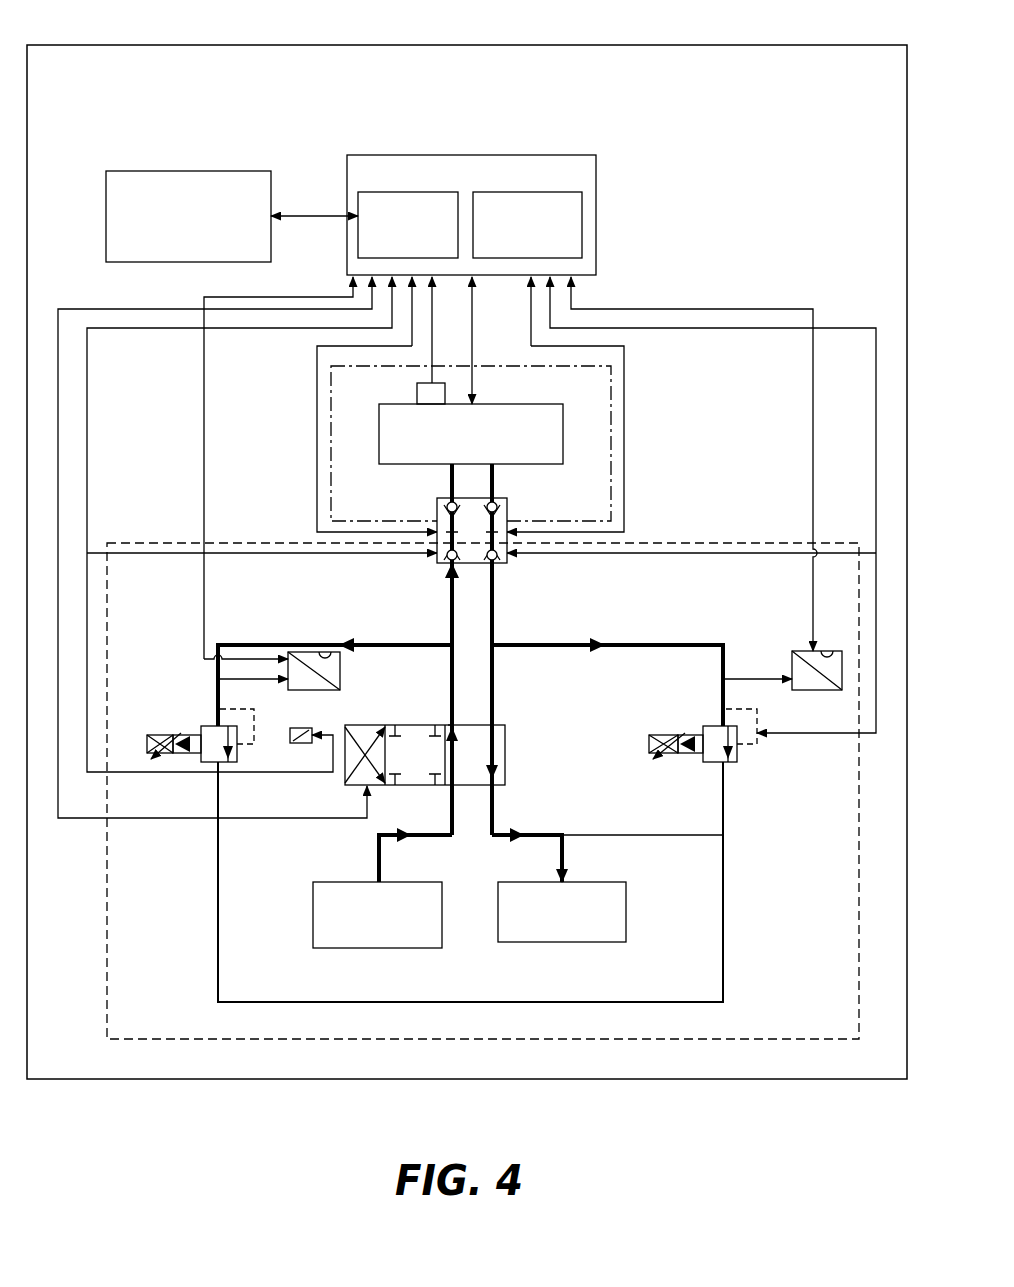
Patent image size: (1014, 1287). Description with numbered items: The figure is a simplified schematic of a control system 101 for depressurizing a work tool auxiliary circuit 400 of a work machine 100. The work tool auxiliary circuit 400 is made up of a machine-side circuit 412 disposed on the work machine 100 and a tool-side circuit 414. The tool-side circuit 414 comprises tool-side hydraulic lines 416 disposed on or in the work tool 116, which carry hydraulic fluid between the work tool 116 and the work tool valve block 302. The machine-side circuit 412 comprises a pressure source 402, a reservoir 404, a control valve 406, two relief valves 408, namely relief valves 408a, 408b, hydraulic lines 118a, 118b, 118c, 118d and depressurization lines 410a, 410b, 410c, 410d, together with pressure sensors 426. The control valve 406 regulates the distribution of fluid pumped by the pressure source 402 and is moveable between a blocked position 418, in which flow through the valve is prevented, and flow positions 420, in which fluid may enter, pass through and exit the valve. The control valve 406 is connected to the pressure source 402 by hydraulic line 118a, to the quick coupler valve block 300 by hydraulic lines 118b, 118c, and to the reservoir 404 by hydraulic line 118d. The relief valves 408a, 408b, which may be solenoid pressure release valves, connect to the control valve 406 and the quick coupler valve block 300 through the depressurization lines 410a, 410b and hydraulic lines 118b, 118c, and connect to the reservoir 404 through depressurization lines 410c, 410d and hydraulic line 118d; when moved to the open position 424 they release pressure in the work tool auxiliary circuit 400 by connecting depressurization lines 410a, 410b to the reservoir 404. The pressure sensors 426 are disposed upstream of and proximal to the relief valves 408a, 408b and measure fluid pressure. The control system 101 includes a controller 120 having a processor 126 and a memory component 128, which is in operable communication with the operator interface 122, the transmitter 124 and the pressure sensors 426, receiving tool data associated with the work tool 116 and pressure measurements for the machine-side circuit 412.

The work machine 100 is at (742, 44).
The control system 101 is at (165, 100).
The work tool 116 is at (498, 404).
The hydraulic line 118a is at (375, 860).
The hydraulic line 118b is at (448, 619).
The hydraulic line 118c is at (493, 619).
The hydraulic line 118d is at (493, 810).
The controller 120 is at (525, 153).
The operator interface 122 is at (195, 170).
The transmitter 124 is at (417, 392).
The processor 126 is at (358, 199).
The memory component 128 is at (583, 226).
The quick coupler valve block 300 is at (443, 565).
The work tool valve block 302 is at (437, 510).
The work tool auxiliary circuit 400 is at (295, 420).
The pressure source 402 is at (377, 950).
The reservoir 404 is at (562, 942).
The control valve 406 is at (336, 773).
The relief valves 408 is at (474, 754).
The relief valve 408a is at (212, 727).
The relief valve 408b is at (732, 762).
The depressurization line 410a is at (257, 643).
The depressurization line 410b is at (620, 643).
The depressurization line 410c is at (218, 897).
The depressurization line 410d is at (625, 834).
The machine-side circuit 412 is at (741, 543).
The tool-side circuit 414 is at (614, 441).
The tool-side hydraulic lines 416 is at (450, 481).
The blocked position 418 is at (415, 773).
The flow positions 420 is at (362, 725).
The open position 424 is at (212, 763).
The pressure sensors 426 is at (313, 688).